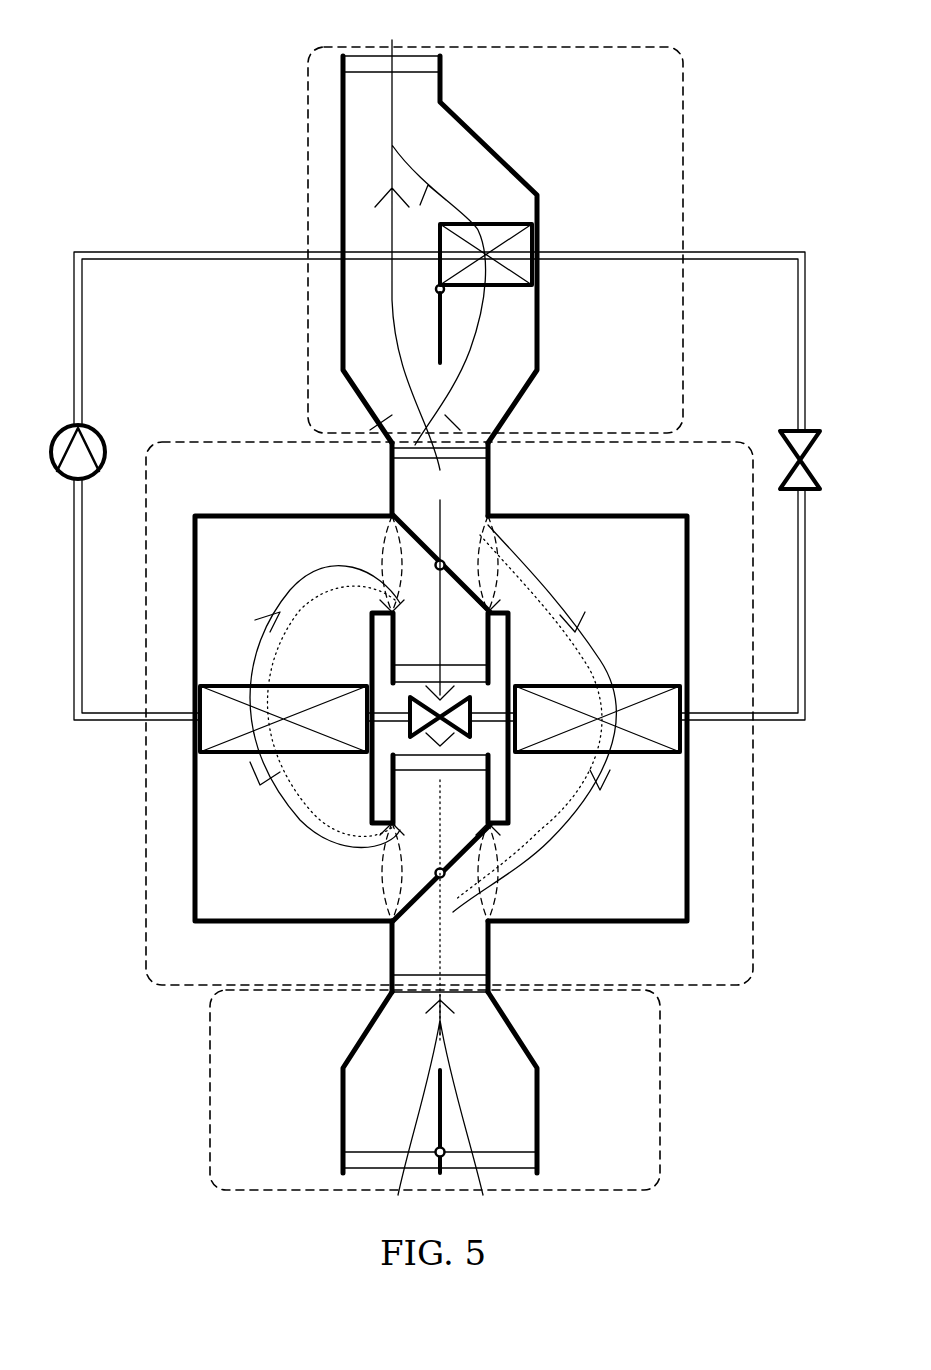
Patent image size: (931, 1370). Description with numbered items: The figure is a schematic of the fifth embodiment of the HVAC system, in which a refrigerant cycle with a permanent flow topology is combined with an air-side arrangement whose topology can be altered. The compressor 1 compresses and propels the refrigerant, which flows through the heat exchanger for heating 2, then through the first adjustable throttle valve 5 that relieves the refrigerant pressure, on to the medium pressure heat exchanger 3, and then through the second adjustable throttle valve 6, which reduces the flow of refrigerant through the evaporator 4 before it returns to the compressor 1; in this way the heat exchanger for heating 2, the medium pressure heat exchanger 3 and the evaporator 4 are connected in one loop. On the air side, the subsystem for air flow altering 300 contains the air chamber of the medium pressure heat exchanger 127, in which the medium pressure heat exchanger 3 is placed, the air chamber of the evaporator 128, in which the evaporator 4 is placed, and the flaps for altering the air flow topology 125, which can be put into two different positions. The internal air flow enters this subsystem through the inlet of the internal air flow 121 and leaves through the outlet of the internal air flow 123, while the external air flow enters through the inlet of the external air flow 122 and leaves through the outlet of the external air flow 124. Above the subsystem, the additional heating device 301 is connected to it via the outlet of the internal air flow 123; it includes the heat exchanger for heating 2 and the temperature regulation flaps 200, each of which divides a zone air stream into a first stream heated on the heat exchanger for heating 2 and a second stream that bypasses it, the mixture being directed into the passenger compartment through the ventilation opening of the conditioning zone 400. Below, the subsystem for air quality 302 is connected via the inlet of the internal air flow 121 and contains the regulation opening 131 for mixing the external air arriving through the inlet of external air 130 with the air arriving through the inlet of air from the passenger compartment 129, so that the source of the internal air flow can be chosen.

The compressor 1 is at (90, 456).
The heat exchanger for heating 2 is at (525, 262).
The medium pressure heat exchanger 3 is at (640, 700).
The evaporator 4 is at (200, 700).
The first adjustable throttle valve 5 is at (800, 430).
The second adjustable throttle valve 6 is at (482, 712).
The inlet of the internal air flow 121 is at (495, 975).
The inlet of the external air flow 122 is at (398, 763).
The outlet of the internal air flow 123 is at (470, 448).
The outlet of the external air flow 124 is at (400, 672).
The flaps for altering the air flow topology 125 is at (398, 528).
The air chamber of the medium pressure heat exchanger 127 is at (575, 855).
The air chamber of the evaporator 128 is at (300, 850).
The inlet of air from the passenger compartment 129 is at (392, 1158).
The inlet of external air 130 is at (495, 1170).
The regulation opening for mixing the external air and passenger compartment air 131 is at (450, 1108).
The temperature regulation flaps 200 is at (443, 320).
The subsystem for air flow altering 300 is at (150, 880).
The additional heating device 301 is at (318, 268).
The subsystem for air quality 302 is at (262, 1080).
The ventilation opening of the conditioning zone 400 is at (420, 72).